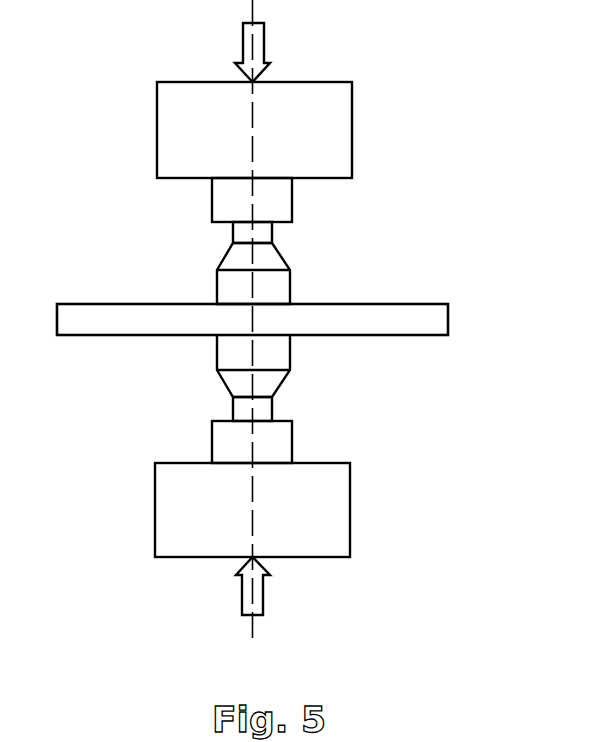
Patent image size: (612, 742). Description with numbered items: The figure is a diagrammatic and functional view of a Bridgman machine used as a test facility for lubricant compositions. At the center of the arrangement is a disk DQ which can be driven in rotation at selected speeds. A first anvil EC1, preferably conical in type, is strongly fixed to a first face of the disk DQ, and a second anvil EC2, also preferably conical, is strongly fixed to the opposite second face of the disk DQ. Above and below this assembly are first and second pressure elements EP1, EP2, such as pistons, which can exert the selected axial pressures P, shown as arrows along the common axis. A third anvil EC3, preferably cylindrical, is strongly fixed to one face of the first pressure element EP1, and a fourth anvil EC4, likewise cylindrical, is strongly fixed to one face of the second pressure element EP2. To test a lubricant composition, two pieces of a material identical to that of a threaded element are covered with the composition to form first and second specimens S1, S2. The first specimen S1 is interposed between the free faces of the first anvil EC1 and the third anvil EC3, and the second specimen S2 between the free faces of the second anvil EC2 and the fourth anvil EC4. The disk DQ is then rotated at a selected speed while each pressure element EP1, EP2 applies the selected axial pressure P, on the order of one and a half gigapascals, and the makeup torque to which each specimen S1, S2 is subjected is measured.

The axial pressure P is at (258, 50).
The first pressure element EP1 is at (157, 146).
The second pressure element EP2 is at (155, 530).
The third anvil EC3 is at (212, 200).
The fourth anvil EC4 is at (212, 447).
The first anvil EC1 is at (217, 297).
The second anvil EC2 is at (217, 380).
The first specimen S1 is at (272, 232).
The second specimen S2 is at (272, 411).
The disk DQ is at (57, 325).